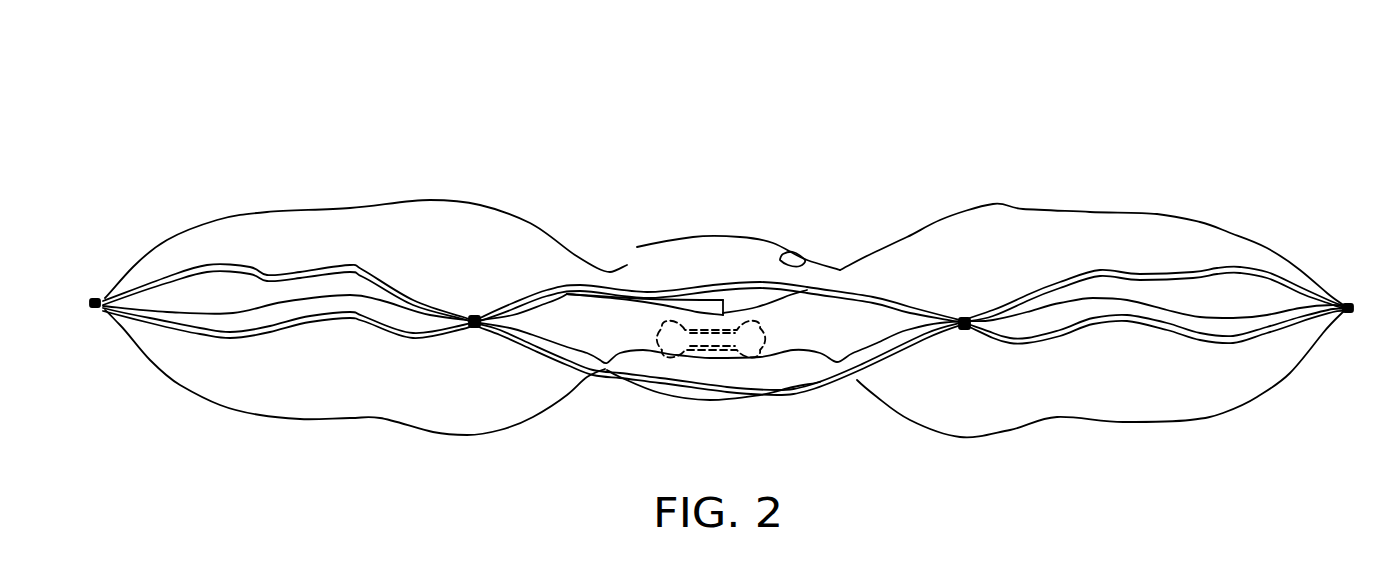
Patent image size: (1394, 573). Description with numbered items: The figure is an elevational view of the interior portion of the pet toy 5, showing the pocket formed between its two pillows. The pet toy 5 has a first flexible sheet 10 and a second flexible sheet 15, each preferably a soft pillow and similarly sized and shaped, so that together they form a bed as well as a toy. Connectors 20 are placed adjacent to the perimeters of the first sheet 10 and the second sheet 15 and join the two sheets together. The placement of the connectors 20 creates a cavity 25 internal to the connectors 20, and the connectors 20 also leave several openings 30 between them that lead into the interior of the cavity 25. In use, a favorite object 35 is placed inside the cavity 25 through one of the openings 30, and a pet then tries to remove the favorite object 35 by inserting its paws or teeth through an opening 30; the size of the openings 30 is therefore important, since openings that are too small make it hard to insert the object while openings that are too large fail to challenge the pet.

The pet toy 5 is at (373, 147).
The first flexible sheet 10 is at (1093, 225).
The second flexible sheet 15 is at (1163, 403).
The connectors 20 is at (97, 297).
The cavity 25 is at (642, 321).
The openings 30 is at (267, 277).
The favorite object 35 is at (763, 330).